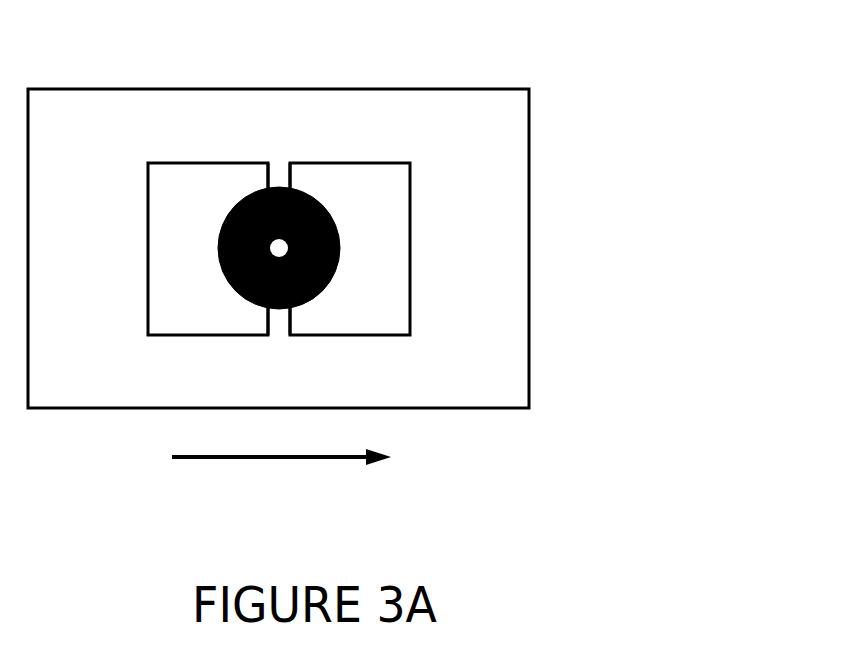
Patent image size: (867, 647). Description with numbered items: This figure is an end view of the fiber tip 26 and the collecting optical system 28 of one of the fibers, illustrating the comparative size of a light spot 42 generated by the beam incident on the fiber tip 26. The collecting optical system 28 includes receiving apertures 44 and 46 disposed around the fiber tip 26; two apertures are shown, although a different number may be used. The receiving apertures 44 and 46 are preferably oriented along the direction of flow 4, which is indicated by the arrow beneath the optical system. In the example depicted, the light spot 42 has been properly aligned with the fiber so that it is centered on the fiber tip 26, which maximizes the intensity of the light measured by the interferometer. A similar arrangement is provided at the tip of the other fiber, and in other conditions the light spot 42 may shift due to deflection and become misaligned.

The collecting optical system 28 is at (530, 200).
The receiving aperture 44 is at (212, 163).
The receiving aperture 46 is at (358, 163).
The light spot 42 is at (218, 248).
The fiber tip 26 is at (291, 309).
The direction of flow 4 is at (307, 460).